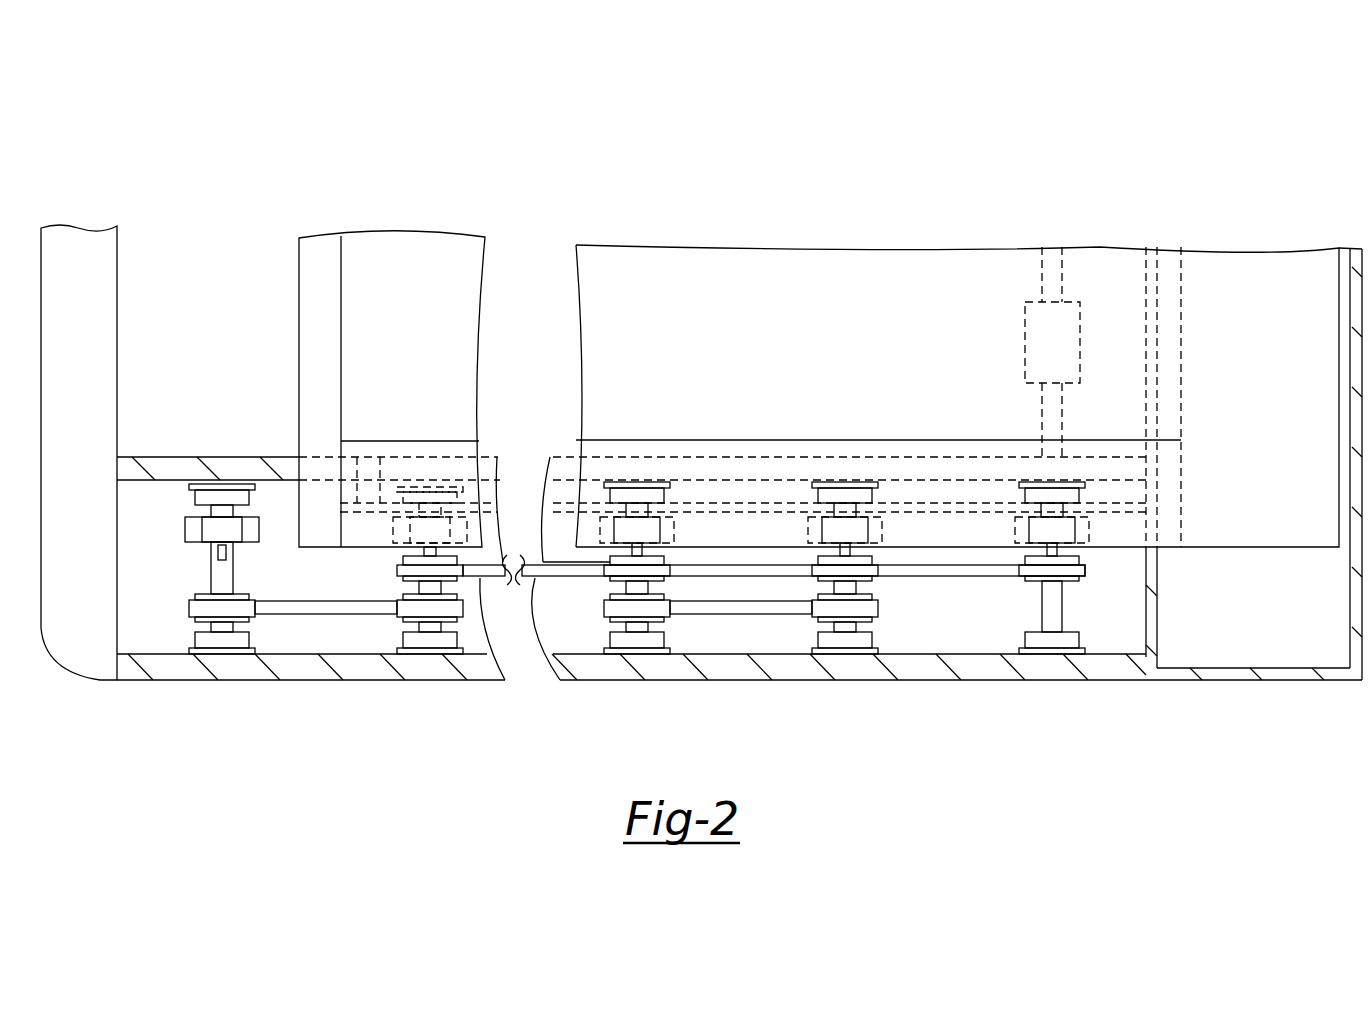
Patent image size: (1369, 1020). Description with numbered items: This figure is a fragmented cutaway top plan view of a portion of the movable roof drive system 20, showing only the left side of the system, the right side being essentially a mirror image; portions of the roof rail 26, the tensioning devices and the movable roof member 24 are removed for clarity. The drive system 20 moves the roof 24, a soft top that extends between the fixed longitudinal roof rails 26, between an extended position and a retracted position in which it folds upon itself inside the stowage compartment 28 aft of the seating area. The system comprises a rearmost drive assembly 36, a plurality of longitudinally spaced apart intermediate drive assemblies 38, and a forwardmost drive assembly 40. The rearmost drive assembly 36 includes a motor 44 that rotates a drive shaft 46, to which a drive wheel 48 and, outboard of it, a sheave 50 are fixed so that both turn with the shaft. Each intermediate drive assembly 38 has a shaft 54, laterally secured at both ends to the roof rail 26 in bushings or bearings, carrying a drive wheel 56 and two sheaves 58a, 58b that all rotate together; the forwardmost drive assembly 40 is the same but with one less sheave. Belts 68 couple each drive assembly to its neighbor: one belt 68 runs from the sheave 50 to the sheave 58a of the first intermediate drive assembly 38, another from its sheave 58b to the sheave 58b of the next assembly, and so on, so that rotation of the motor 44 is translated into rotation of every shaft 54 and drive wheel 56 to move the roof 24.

The movable roof drive system 20 is at (896, 92).
The movable roof member 24 is at (418, 245).
The roof rail 26 is at (172, 683).
The stowage compartment 28 is at (1255, 272).
The rearmost drive assembly 36 is at (1047, 696).
The intermediate drive assembly 38 is at (423, 693).
The forwardmost drive assembly 40 is at (223, 700).
The motor 44 is at (1027, 334).
The drive shaft 46 is at (1040, 277).
The drive wheel 48 is at (1110, 525).
The sheave 50 is at (1085, 576).
The shaft 54 is at (422, 586).
The drive wheel 56 is at (185, 528).
The sheave 58a is at (458, 577).
The sheave 58b is at (458, 617).
The belt 68 is at (572, 578).